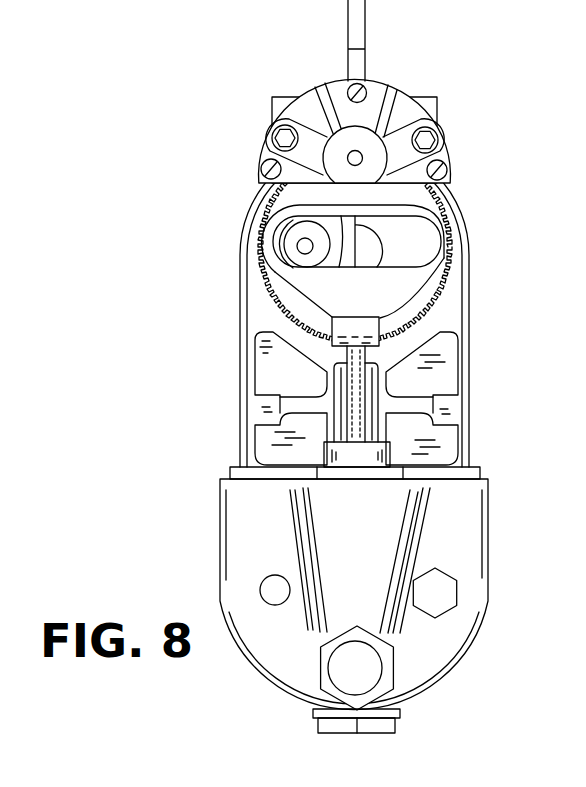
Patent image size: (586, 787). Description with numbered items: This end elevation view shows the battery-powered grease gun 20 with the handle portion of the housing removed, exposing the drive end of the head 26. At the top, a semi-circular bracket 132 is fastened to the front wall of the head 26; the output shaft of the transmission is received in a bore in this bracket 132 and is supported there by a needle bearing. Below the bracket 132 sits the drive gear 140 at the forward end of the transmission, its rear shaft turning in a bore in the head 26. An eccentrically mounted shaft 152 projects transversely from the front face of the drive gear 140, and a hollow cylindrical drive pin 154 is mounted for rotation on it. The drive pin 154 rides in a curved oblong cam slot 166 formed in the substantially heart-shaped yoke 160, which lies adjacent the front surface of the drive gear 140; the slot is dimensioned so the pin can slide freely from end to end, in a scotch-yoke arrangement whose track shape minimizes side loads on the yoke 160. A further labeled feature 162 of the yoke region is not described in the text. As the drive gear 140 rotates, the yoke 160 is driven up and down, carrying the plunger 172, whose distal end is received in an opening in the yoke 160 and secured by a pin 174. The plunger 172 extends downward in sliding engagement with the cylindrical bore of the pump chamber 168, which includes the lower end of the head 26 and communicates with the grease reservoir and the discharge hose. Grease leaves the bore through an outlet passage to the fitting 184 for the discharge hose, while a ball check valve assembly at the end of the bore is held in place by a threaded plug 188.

The actuator assembly 20 is at (513, 180).
The head 26 is at (227, 337).
The semi-circular bracket 132 is at (312, 102).
The drive gear 140 is at (283, 306).
The eccentrically mounted shaft 152 is at (297, 246).
The drive pin 154 is at (321, 262).
The yoke 160 is at (284, 208).
The cam flank 162 is at (403, 286).
The cam slot 166 is at (427, 234).
The pump chamber 168 is at (462, 512).
The plunger 172 is at (354, 399).
The pin 174 is at (358, 327).
The fitting 184 is at (326, 659).
The threaded plug 188 is at (306, 716).